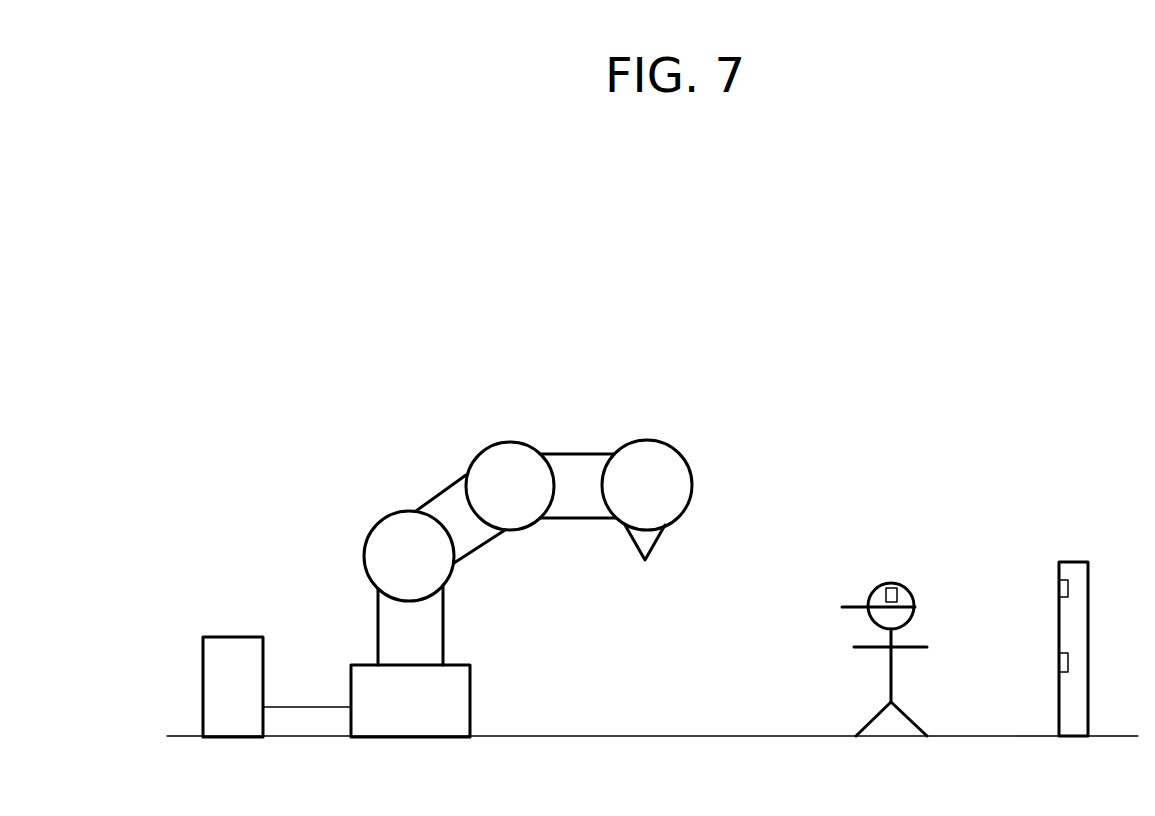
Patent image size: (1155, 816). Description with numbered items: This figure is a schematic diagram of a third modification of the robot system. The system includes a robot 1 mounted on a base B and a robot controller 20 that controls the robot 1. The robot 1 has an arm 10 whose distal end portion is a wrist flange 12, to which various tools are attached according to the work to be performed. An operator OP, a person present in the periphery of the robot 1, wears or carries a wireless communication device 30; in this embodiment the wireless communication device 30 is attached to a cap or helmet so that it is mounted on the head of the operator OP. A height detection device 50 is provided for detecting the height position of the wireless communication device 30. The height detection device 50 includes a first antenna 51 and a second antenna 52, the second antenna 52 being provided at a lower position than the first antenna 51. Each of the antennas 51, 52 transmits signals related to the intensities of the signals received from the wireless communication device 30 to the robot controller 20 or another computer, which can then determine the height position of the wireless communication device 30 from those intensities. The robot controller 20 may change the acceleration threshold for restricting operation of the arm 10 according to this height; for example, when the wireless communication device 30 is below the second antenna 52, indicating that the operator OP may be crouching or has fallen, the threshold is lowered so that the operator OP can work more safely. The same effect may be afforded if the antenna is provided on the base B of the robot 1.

The robot 1 is at (383, 423).
The arm 10 is at (567, 453).
The wrist flange 12 is at (658, 543).
The robot controller 20 is at (232, 637).
The wireless communication device 30 is at (890, 582).
The operator OP is at (913, 592).
The height detection device 50 is at (1073, 562).
The first antenna 51 is at (1059, 585).
The second antenna 52 is at (1059, 658).
The base B is at (470, 692).